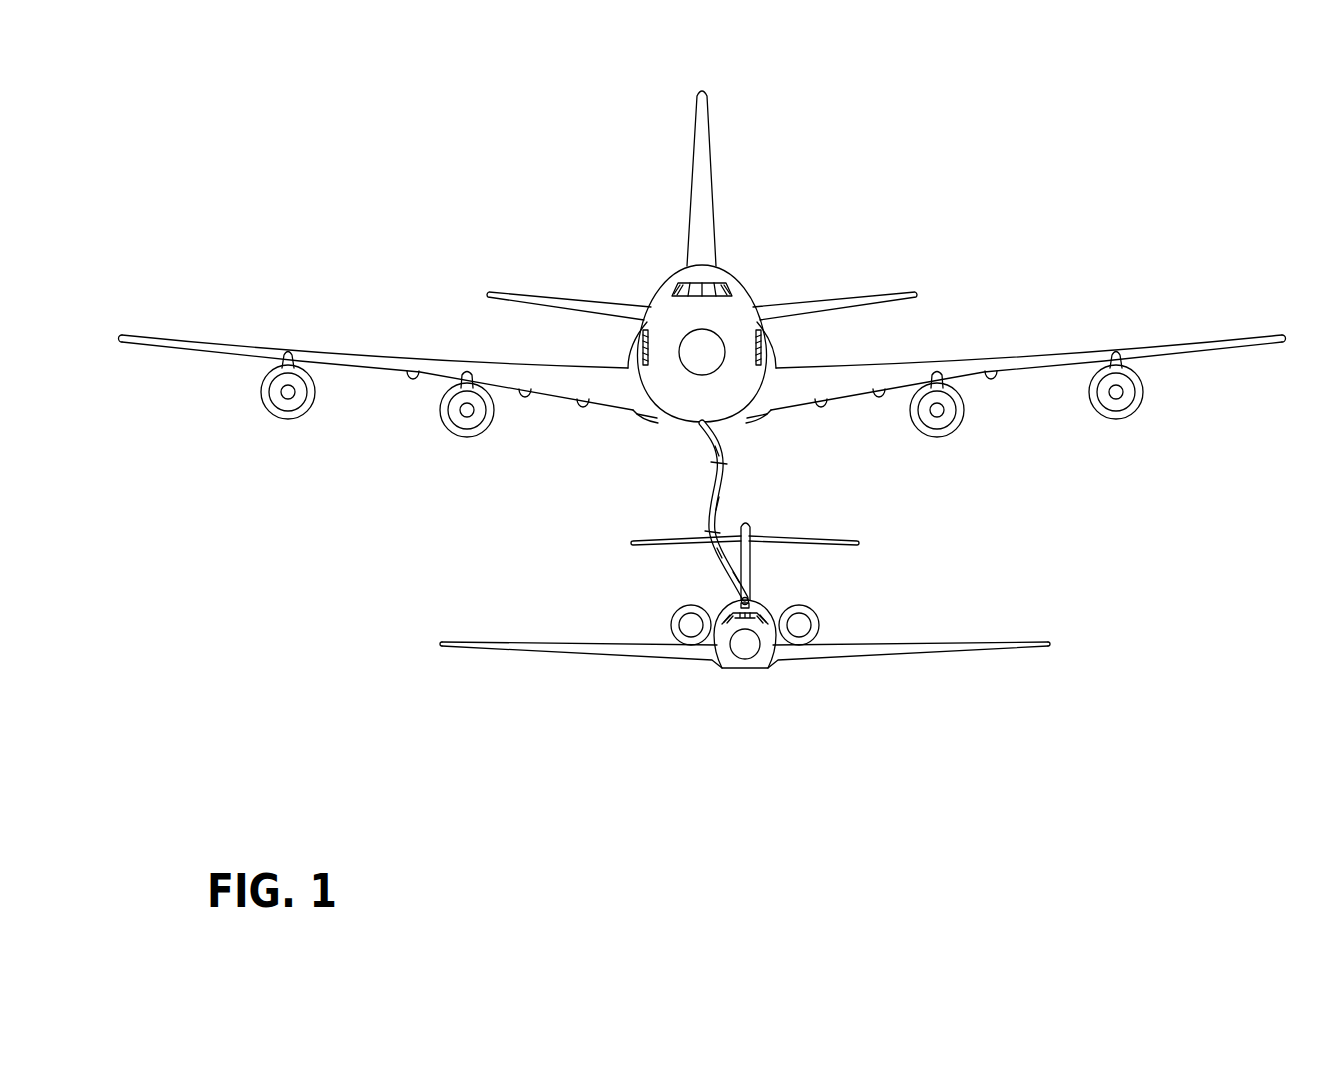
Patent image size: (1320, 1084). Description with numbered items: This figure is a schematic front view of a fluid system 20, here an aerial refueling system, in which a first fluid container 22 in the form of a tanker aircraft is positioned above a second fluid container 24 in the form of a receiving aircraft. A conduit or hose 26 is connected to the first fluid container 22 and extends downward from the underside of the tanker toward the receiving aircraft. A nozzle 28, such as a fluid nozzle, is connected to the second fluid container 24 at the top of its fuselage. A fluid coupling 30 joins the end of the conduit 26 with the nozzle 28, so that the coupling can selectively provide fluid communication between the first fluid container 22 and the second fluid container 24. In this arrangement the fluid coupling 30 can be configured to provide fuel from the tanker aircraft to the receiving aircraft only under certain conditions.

The fluid system 20 is at (702, 404).
The first fluid container 22 is at (750, 297).
The second fluid container 24 is at (745, 620).
The conduit/hose 26 is at (737, 514).
The nozzle 28 is at (752, 596).
The fluid coupling 30 is at (737, 593).